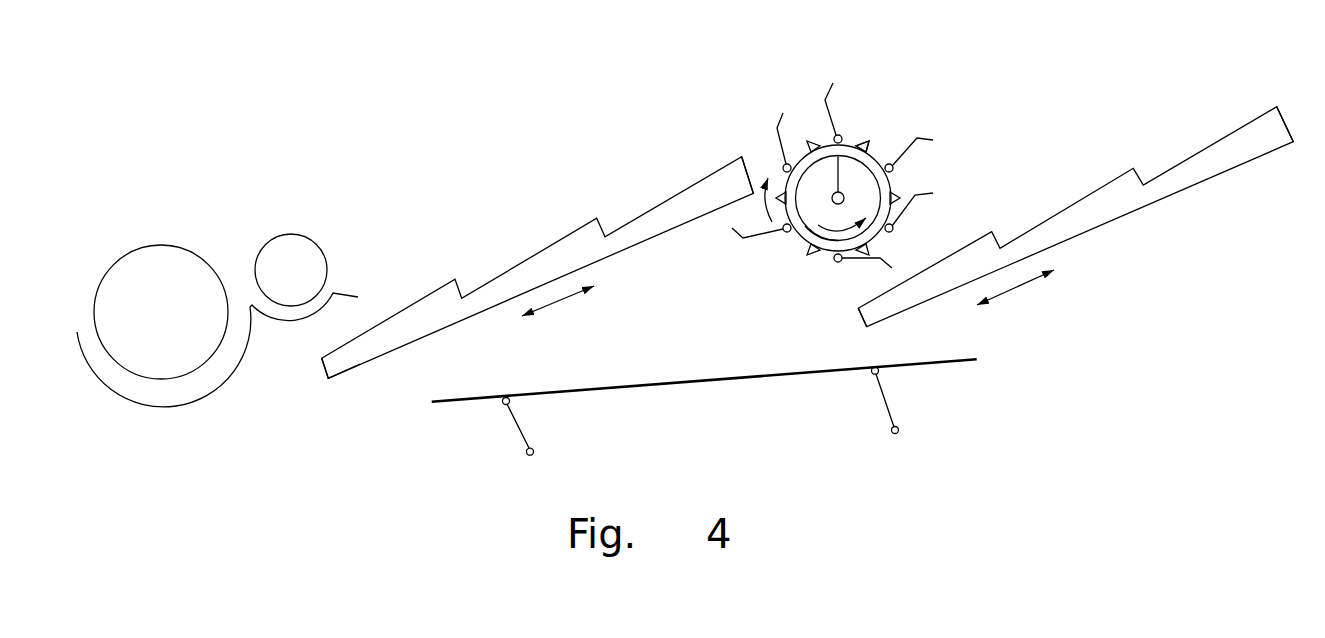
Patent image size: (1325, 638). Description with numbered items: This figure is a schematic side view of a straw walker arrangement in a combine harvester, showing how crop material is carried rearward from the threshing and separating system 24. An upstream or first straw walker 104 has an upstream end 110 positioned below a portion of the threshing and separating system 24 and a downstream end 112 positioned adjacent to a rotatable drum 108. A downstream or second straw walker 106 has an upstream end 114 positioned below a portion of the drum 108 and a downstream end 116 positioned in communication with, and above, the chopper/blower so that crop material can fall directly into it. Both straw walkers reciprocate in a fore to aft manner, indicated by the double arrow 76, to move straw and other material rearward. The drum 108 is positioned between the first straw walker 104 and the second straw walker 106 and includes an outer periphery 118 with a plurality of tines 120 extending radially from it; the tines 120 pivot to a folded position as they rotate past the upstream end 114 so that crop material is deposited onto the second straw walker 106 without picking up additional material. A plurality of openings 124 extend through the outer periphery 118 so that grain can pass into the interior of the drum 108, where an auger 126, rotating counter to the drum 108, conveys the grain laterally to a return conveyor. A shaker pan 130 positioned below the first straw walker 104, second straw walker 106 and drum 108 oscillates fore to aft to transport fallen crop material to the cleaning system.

The threshing and separating system 24 is at (233, 232).
The double arrow 76 is at (558, 303).
The first straw walker 104 is at (500, 267).
The second straw walker 106 is at (1110, 165).
The rotatable drum 108 is at (893, 132).
The upstream end 110 is at (347, 378).
The downstream end 112 is at (693, 180).
The upstream end 114 is at (862, 317).
The downstream end 116 is at (1248, 122).
The outer periphery 118 is at (820, 253).
The tines 120 is at (920, 202).
The openings 124 is at (870, 140).
The auger 126 is at (800, 255).
The shaker pan 130 is at (697, 382).